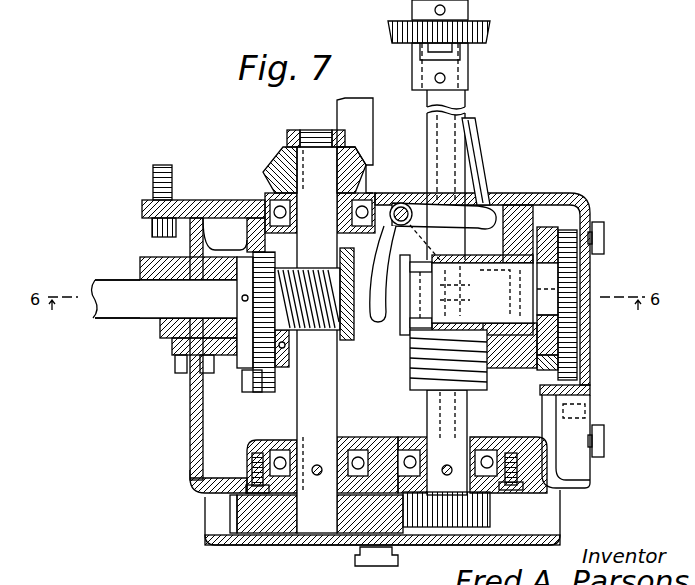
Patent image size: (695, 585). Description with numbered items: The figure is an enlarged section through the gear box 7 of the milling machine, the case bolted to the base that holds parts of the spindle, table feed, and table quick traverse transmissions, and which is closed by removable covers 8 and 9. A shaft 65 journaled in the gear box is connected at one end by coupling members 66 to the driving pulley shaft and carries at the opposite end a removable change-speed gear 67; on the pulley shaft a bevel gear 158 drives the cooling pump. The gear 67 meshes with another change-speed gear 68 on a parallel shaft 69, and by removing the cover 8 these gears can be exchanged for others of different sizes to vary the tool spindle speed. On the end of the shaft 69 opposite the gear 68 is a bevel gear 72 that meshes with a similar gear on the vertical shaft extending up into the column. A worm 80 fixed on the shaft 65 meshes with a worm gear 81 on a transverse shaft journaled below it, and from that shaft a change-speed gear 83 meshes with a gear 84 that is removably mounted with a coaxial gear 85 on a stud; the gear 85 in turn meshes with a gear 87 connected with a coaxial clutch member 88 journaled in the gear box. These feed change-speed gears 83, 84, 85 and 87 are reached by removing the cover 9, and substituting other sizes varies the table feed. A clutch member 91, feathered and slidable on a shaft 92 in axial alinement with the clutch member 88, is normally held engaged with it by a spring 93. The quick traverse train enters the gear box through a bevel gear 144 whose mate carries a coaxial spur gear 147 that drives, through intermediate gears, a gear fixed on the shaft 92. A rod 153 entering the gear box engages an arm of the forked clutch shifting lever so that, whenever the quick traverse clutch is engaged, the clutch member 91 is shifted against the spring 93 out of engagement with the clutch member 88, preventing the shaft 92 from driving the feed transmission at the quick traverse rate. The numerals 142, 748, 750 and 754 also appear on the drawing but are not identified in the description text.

The gear box 7 is at (184, 444).
The removable cover 8 is at (290, 552).
The removable cover 9 is at (591, 386).
The shaft 65 is at (447, 125).
The coupling members 66 is at (465, 60).
The change-speed gear 67 is at (496, 513).
The change-speed gear 68 is at (256, 530).
The shaft 69 is at (275, 421).
The bevel gear 72 is at (272, 160).
The worm 80 is at (428, 380).
The worm gear 81 is at (432, 419).
The change-speed gear 83 is at (586, 417).
The gear 84 is at (578, 278).
The gear 85 is at (545, 360).
The gear 87 is at (556, 232).
The clutch member 88 is at (416, 287).
The clutch member 91 is at (383, 284).
The shaft 92 is at (165, 299).
The spring 93 is at (322, 338).
The stop post 142 is at (378, 118).
The bevel gear 144 is at (410, 192).
The spur gear 147 is at (412, 8).
The rod 153 is at (490, 160).
The bevel gear 158 is at (490, 32).
The clutch member 748 is at (254, 390).
The gear 750 is at (258, 248).
The clutch sleeve 754 is at (426, 288).